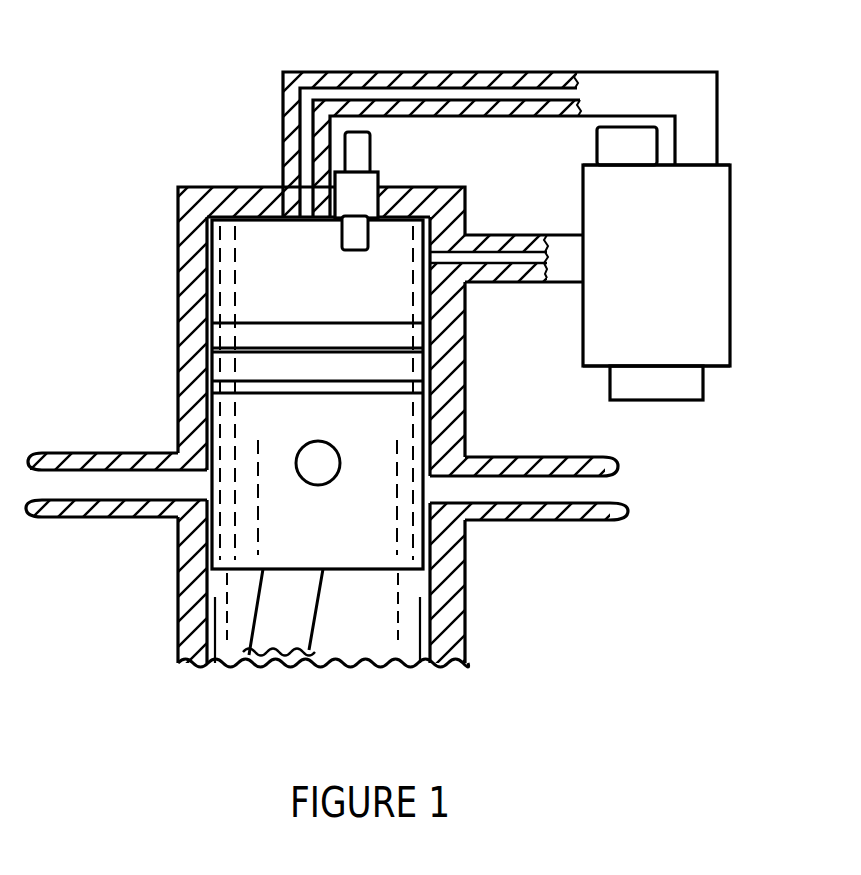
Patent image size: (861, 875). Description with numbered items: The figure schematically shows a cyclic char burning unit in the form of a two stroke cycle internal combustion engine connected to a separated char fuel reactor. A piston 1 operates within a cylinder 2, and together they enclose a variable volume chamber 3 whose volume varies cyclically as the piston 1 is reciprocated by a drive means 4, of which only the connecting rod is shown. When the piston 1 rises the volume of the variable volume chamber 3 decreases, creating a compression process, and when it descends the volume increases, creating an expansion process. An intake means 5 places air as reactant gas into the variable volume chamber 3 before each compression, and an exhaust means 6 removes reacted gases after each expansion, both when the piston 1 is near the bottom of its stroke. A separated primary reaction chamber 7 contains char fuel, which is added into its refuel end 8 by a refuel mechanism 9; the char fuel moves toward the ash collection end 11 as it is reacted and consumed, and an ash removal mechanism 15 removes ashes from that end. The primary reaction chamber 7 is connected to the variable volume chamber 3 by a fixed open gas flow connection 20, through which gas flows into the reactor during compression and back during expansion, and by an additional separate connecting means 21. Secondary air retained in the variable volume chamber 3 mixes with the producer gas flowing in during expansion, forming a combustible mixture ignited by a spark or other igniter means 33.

The piston 1 is at (233, 542).
The cylinder 2 is at (202, 302).
The variable volume chamber 3 is at (250, 252).
The drive means 4 is at (268, 635).
The intake means 5 is at (115, 480).
The exhaust means 6 is at (533, 483).
The primary reaction chamber 7 is at (692, 307).
The refuel end 8 is at (638, 185).
The refuel mechanism 9 is at (622, 142).
The ash collection end 11 is at (665, 358).
The ash removal mechanism 15 is at (658, 385).
The fixed open gas flow connection 20 is at (370, 93).
The separate connecting means 21 is at (470, 260).
The igniter means 33 is at (355, 193).